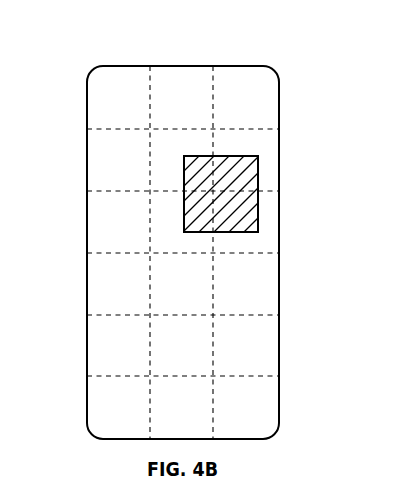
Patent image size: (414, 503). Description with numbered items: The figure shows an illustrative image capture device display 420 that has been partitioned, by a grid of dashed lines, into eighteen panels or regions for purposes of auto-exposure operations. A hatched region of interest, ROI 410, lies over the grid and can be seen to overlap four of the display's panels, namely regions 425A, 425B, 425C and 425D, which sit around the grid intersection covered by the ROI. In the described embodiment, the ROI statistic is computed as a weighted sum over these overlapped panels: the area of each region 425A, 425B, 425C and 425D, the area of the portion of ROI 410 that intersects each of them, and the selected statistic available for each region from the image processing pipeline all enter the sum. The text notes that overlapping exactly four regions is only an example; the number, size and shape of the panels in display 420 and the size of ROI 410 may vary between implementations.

The display 420 is at (255, 65).
The region of interest (ROI) 410 is at (256, 155).
The display region 425A is at (162, 170).
The display region 425B is at (268, 178).
The display region 425C is at (162, 235).
The display region 425D is at (268, 227).